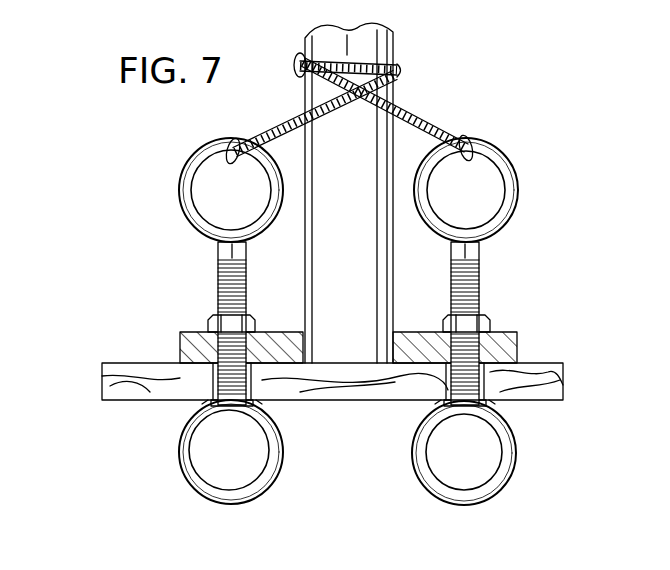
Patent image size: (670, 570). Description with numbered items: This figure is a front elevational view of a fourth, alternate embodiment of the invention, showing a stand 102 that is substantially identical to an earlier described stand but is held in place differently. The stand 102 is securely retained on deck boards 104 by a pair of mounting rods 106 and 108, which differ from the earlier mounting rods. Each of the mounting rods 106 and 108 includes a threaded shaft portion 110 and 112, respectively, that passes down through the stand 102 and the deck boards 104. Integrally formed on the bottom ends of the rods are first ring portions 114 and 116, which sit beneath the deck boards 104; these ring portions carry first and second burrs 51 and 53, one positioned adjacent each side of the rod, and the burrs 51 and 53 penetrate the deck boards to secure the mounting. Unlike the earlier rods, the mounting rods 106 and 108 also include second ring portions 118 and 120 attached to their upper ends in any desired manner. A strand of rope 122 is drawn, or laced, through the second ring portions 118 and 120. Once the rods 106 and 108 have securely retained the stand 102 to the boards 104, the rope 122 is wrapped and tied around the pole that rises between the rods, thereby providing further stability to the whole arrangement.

The first burr 51 is at (262, 402).
The second burr 53 is at (185, 404).
The stand 102 is at (180, 342).
The deck boards 104 is at (112, 385).
The mounting rod 106 is at (210, 258).
The mounting rod 108 is at (486, 257).
The threaded shaft portion 110 is at (218, 296).
The threaded shaft portion 112 is at (479, 290).
The first ring portion 114 is at (180, 458).
The first ring portion 116 is at (503, 470).
The second ring portion 118 is at (182, 184).
The second ring portion 120 is at (516, 172).
The rope 122 is at (412, 124).